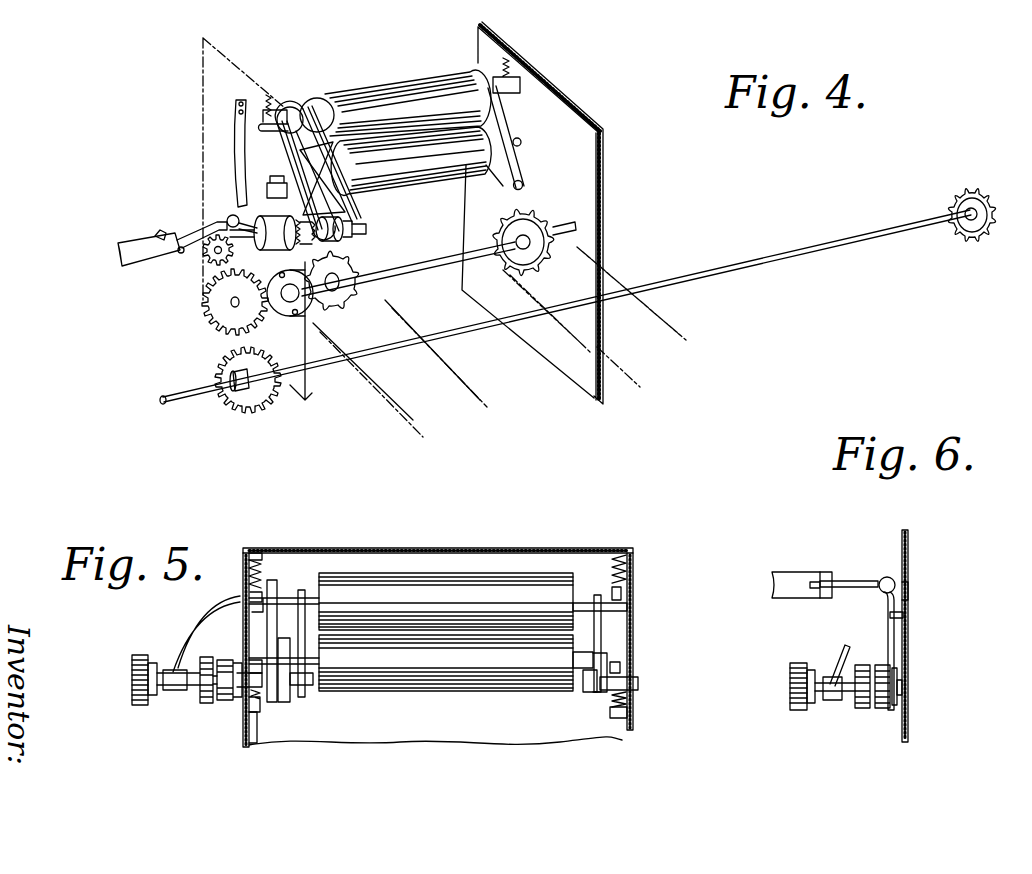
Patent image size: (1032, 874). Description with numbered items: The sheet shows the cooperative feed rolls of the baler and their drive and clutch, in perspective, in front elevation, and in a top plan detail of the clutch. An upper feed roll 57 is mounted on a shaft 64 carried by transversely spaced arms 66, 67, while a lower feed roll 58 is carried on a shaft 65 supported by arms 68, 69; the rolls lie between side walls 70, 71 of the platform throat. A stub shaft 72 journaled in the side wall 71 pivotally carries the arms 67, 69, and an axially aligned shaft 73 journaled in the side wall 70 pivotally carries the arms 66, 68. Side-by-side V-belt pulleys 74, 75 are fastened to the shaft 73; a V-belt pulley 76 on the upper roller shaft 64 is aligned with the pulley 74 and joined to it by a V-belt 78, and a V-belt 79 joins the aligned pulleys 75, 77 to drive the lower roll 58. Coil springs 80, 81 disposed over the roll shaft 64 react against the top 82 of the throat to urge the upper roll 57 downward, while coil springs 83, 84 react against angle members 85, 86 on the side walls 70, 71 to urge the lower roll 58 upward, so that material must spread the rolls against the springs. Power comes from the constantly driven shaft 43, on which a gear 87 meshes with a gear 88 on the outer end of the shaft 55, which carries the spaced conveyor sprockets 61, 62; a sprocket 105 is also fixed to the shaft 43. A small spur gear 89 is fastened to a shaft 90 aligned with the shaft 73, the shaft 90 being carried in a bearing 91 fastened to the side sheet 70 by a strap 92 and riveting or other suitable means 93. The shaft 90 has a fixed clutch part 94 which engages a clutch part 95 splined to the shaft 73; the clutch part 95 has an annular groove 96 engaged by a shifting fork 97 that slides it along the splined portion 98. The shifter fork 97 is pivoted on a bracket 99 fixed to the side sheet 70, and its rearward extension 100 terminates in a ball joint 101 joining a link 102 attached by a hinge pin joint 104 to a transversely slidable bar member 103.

In FIG. 4, the shaft 43 is at (182, 386).
In FIG. 4, the shaft 55 is at (414, 272).
In FIG. 4, the upper feed roll 57 is at (388, 84).
In FIG. 5, the upper feed roll 57 is at (479, 585).
In FIG. 4, the lower feed roll 58 is at (413, 178).
In FIG. 5, the lower feed roll 58 is at (438, 692).
In FIG. 4, the sprocket 61 is at (338, 318).
In FIG. 4, the sprocket 62 is at (497, 238).
In FIG. 4, the shaft 64 is at (519, 90).
In FIG. 5, the shaft 64 is at (582, 600).
In FIG. 4, the shaft 65 is at (521, 145).
In FIG. 5, the shaft 65 is at (574, 656).
In FIG. 4, the arm 66 is at (327, 161).
In FIG. 5, the arm 66 is at (303, 620).
In FIG. 4, the arm 67 is at (500, 122).
In FIG. 5, the arm 67 is at (602, 627).
In FIG. 4, the arm 68 is at (313, 191).
In FIG. 5, the arm 68 is at (296, 650).
In FIG. 4, the arm 69 is at (503, 172).
In FIG. 5, the arm 69 is at (578, 676).
In FIG. 4, the side wall 70 is at (205, 121).
In FIG. 5, the side wall 70 is at (243, 742).
In FIG. 6, the side wall 70 is at (910, 638).
In FIG. 4, the side wall 71 is at (577, 112).
In FIG. 5, the side wall 71 is at (635, 636).
In FIG. 4, the stub shaft 72 is at (523, 187).
In FIG. 5, the stub shaft 72 is at (639, 684).
In FIG. 4, the shaft 73 is at (347, 229).
In FIG. 5, the shaft 73 is at (306, 690).
In FIG. 4, the V-belt pulley 74 is at (342, 241).
In FIG. 4, the V-belt pulley 75 is at (352, 235).
In FIG. 4, the V-belt pulley 76 is at (290, 116).
In FIG. 4, the pulley 77 is at (290, 176).
In FIG. 4, the V-belt 78 is at (290, 147).
In FIG. 5, the V-belt 78 is at (273, 628).
In FIG. 4, the V-belt 79 is at (366, 184).
In FIG. 5, the coil spring 80 is at (258, 553).
In FIG. 5, the coil spring 81 is at (617, 565).
In FIG. 5, the top of the platform throat 82 is at (371, 550).
In FIG. 5, the coil spring 83 is at (257, 703).
In FIG. 5, the coil spring 84 is at (612, 702).
In FIG. 5, the angle member 85 is at (252, 740).
In FIG. 5, the angle member 86 is at (618, 720).
In FIG. 4, the gear 87 is at (240, 415).
In FIG. 4, the gear 88 is at (222, 316).
In FIG. 4, the small spur gear 89 is at (215, 260).
In FIG. 5, the small spur gear 89 is at (131, 675).
In FIG. 6, the small spur gear 89 is at (793, 666).
In FIG. 5, the shaft 90 is at (157, 670).
In FIG. 6, the shaft 90 is at (810, 703).
In FIG. 5, the bearing 91 is at (170, 692).
In FIG. 6, the bearing 91 is at (833, 703).
In FIG. 4, the strap 92 is at (235, 166).
In FIG. 5, the strap 92 is at (200, 620).
In FIG. 6, the strap 92 is at (843, 650).
In FIG. 5, the riveting or other suitable means 93 is at (240, 579).
In FIG. 5, the fixed clutch part 94 is at (206, 704).
In FIG. 6, the fixed clutch part 94 is at (860, 708).
In FIG. 4, the clutch part 95 is at (270, 222).
In FIG. 5, the clutch part 95 is at (223, 665).
In FIG. 6, the clutch part 95 is at (893, 670).
In FIG. 4, the annular groove 96 is at (332, 280).
In FIG. 5, the annular groove 96 is at (236, 700).
In FIG. 6, the annular groove 96 is at (893, 712).
In FIG. 6, the shifting fork 97 is at (888, 626).
In FIG. 6, the splined portion 98 is at (882, 712).
In FIG. 6, the bracket 99 is at (896, 614).
In FIG. 6, the rearward extension 100 is at (905, 590).
In FIG. 6, the ball joint 101 is at (887, 577).
In FIG. 4, the link 102 is at (178, 257).
In FIG. 6, the link 102 is at (846, 580).
In FIG. 4, the bar member 103 is at (135, 243).
In FIG. 6, the bar member 103 is at (782, 572).
In FIG. 4, the hinge pin joint 104 is at (166, 232).
In FIG. 6, the hinge pin joint 104 is at (822, 580).
In FIG. 4, the sprocket 105 is at (981, 193).